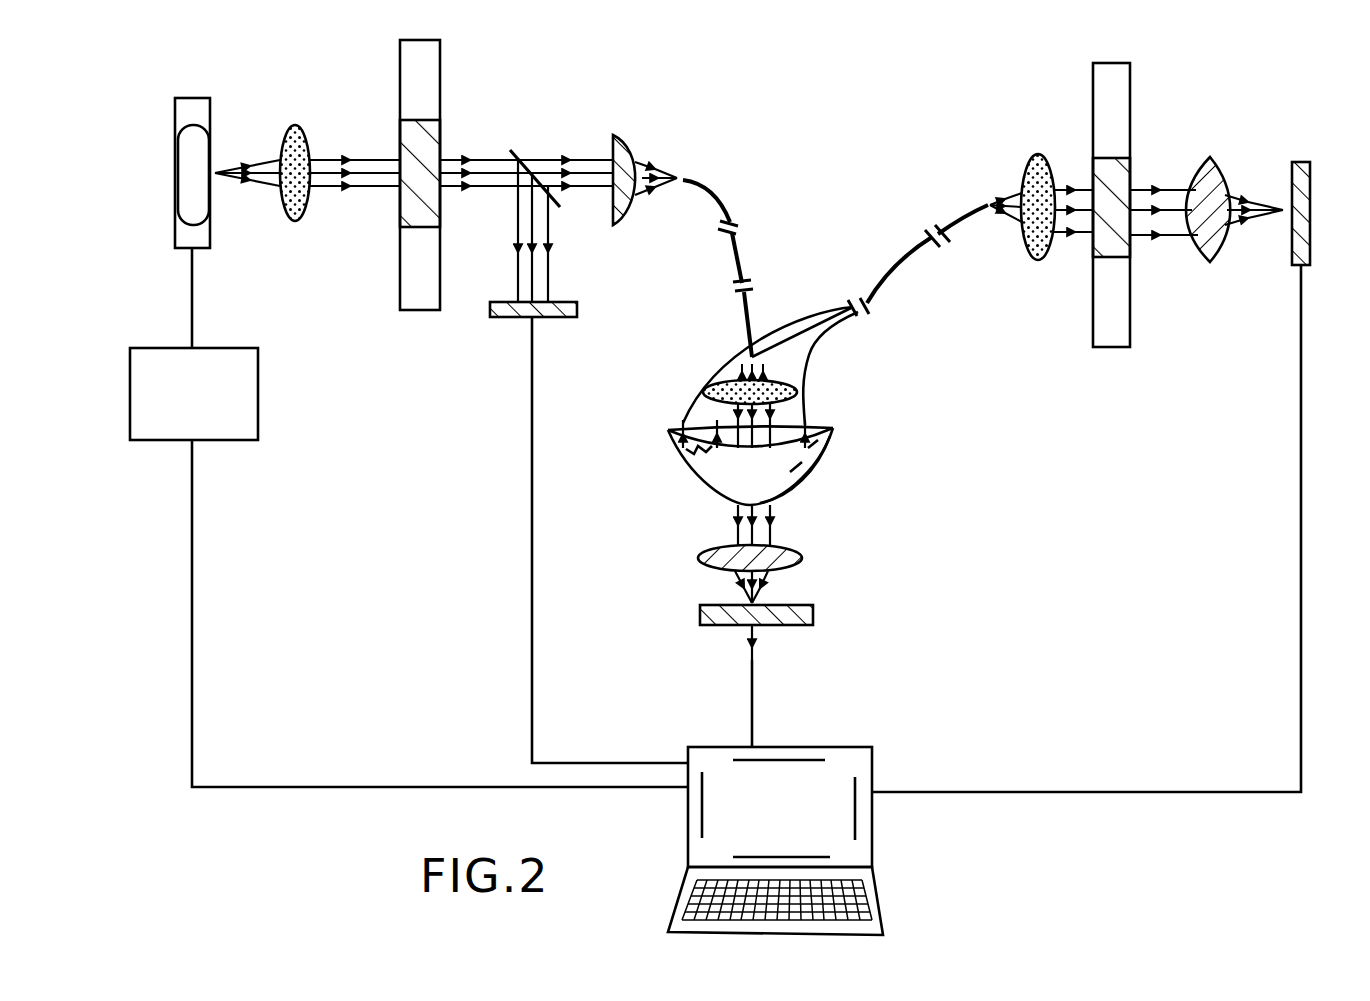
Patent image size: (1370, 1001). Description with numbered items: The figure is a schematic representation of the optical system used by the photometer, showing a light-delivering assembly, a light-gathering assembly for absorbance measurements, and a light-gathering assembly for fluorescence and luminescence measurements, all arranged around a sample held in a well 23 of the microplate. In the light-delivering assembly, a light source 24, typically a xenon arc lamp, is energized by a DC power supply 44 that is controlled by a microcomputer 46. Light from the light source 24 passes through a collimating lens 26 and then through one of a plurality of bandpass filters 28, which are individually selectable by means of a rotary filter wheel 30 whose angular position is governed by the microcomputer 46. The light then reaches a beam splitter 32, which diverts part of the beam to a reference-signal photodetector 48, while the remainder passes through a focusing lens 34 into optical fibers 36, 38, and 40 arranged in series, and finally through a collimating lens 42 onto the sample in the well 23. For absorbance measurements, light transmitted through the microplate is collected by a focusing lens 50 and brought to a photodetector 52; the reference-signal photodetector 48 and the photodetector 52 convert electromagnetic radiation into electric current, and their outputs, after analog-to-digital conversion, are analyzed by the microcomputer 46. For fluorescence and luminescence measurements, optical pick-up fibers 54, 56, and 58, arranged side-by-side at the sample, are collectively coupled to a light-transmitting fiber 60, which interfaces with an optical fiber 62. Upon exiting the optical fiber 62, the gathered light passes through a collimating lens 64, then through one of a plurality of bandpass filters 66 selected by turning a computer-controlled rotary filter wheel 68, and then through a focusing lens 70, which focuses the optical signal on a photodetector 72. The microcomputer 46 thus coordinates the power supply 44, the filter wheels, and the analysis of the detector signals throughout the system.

The well 23 is at (824, 446).
The light source 24 is at (224, 90).
The collimating lens 26 is at (298, 148).
The bandpass filters 28 is at (438, 142).
The rotary filter wheel 30 is at (440, 80).
The beam splitter 32 is at (520, 156).
The focusing lens 34 is at (640, 142).
The optical fiber 36 is at (718, 190).
The optical fiber 38 is at (745, 252).
The optical fiber 40 is at (746, 330).
The collimating lens 42 is at (798, 393).
The DC power supply 44 is at (258, 408).
The microcomputer 46 is at (857, 830).
The reference-signal photodetector 48 is at (568, 318).
The focusing lens 50 is at (786, 553).
The photodetector 52 is at (815, 616).
The optical pick-up fiber 54 is at (779, 322).
The optical pick-up fiber 56 is at (794, 333).
The optical pick-up fiber 58 is at (809, 348).
The light-transmitting fiber 60 is at (895, 267).
The optical fiber 62 is at (960, 212).
The collimating lens 64 is at (1030, 163).
The bandpass filters 66 is at (1125, 175).
The rotary filter wheel 68 is at (1125, 88).
The focusing lens 70 is at (1208, 170).
The photodetector 72 is at (1311, 184).